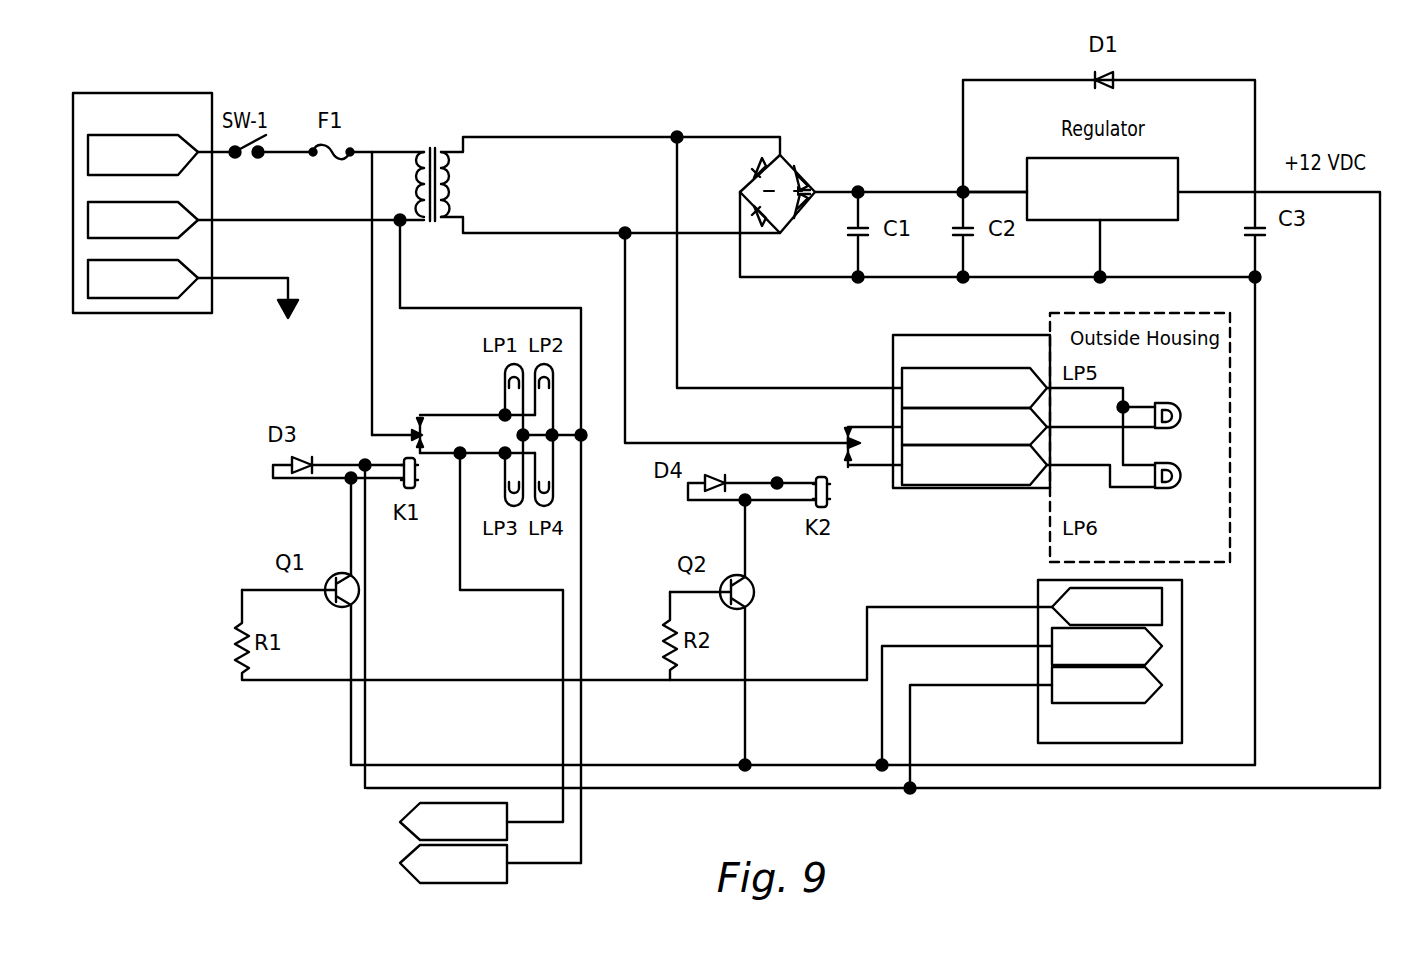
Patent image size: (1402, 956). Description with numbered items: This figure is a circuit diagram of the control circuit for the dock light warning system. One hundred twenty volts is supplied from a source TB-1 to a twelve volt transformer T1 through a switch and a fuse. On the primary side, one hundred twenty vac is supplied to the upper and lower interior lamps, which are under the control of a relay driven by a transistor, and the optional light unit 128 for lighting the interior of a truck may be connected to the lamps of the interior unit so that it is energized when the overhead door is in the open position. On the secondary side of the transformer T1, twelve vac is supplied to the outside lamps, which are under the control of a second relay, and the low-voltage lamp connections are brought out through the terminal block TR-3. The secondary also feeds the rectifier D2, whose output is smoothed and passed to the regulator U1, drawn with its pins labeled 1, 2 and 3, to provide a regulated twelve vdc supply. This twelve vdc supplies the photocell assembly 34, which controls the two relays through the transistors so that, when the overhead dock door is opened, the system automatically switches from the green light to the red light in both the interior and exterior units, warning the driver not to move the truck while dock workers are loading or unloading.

The photocell assembly 34 is at (1147, 727).
The light unit 128 is at (448, 675).
The regulator U1 input pin 1 is at (995, 176).
The regulator U1 output pin 2 is at (1216, 176).
The regulator U1 ground pin 3 is at (1109, 248).
The source TB-1 is at (142, 203).
The transformer T1 is at (433, 157).
The rectifier D2 is at (777, 163).
The voltage regulator U1 is at (1102, 189).
The terminal block TR-3 is at (971, 411).